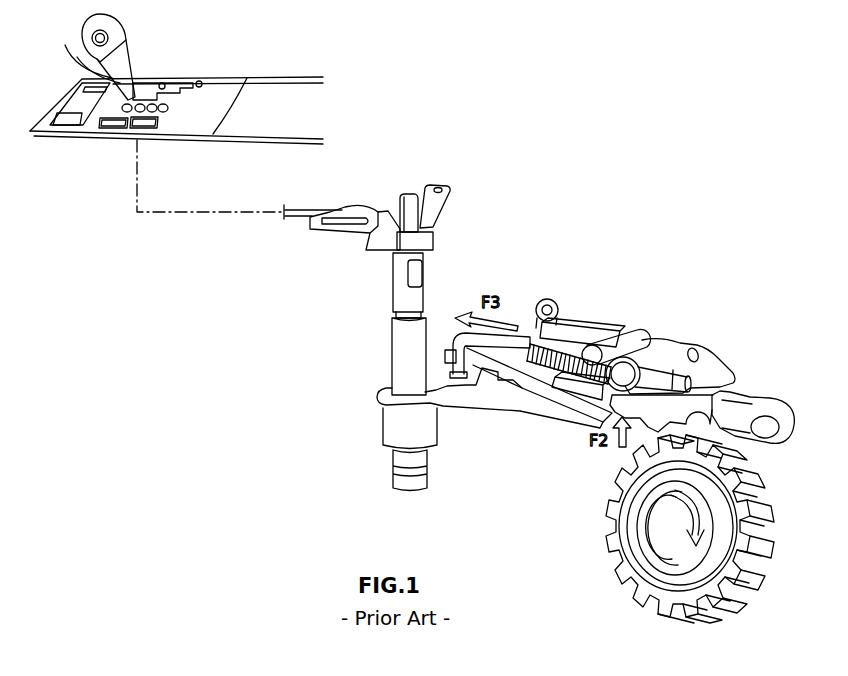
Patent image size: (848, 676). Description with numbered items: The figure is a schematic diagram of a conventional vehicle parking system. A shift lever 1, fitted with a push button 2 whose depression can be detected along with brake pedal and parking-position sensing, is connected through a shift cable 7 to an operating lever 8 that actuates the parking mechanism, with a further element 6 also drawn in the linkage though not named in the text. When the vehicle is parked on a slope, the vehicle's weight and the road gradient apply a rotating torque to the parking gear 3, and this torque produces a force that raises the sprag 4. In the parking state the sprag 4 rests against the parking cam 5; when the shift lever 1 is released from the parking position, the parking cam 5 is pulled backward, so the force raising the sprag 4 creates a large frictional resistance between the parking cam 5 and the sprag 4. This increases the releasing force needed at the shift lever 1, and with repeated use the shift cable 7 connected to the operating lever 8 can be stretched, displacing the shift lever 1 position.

The shift lever 1 is at (128, 48).
The push button 2 is at (106, 33).
The parking gear 3 is at (613, 538).
The sprag 4 is at (778, 398).
The parking cam 5 is at (657, 338).
The spring 6 is at (521, 347).
The shift cable 7 is at (298, 215).
The operating lever 8 is at (443, 192).